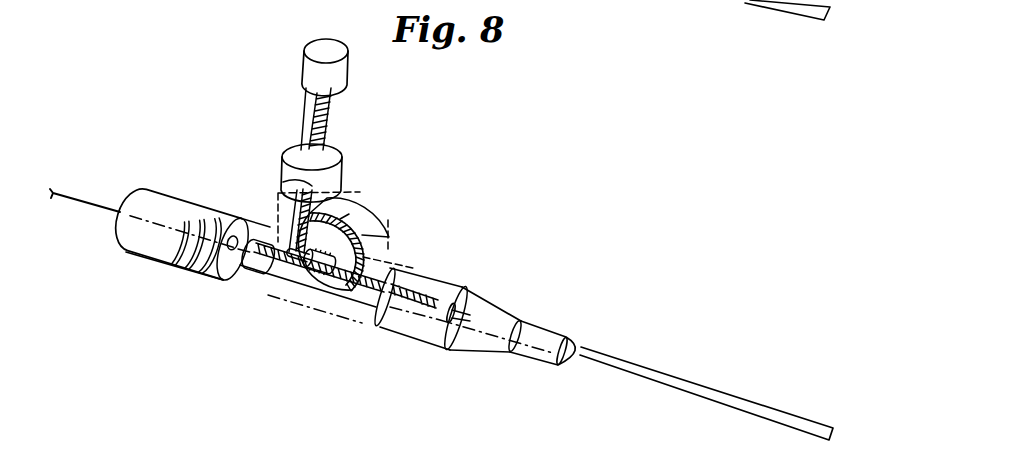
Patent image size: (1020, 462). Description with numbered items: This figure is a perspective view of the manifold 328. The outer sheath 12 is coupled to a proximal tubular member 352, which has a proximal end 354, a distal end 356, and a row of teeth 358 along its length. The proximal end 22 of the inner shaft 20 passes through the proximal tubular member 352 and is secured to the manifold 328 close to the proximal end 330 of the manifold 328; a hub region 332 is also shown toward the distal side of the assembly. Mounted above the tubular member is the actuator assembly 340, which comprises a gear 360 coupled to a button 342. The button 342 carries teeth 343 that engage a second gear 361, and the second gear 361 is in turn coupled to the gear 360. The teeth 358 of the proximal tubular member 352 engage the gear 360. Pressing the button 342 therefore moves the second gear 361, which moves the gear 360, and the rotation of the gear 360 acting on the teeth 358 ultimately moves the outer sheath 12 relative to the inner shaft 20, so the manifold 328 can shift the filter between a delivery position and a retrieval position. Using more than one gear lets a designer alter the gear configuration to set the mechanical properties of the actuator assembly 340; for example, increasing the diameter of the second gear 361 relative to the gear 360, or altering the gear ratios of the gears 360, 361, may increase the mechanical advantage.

The outer sheath 12 is at (656, 381).
The inner shaft 20 is at (243, 268).
The proximal end 22 is at (96, 208).
The manifold 328 is at (168, 190).
The proximal end 330 is at (130, 248).
The hub 332 is at (538, 332).
The actuator assembly 340 is at (363, 192).
The button 342 is at (303, 68).
The teeth 343 is at (322, 130).
The proximal tubular member 352 is at (360, 322).
The proximal end 354 is at (233, 243).
The distal end 356 is at (430, 327).
The teeth 358 is at (367, 240).
The gear 360 is at (362, 205).
The second gear 361 is at (383, 220).